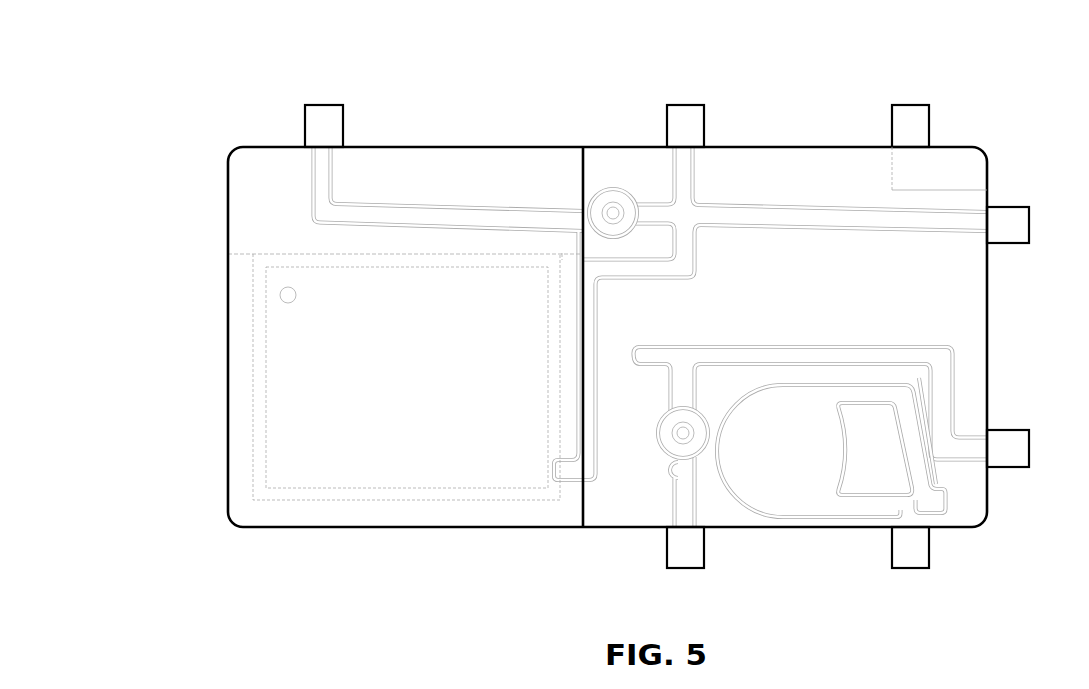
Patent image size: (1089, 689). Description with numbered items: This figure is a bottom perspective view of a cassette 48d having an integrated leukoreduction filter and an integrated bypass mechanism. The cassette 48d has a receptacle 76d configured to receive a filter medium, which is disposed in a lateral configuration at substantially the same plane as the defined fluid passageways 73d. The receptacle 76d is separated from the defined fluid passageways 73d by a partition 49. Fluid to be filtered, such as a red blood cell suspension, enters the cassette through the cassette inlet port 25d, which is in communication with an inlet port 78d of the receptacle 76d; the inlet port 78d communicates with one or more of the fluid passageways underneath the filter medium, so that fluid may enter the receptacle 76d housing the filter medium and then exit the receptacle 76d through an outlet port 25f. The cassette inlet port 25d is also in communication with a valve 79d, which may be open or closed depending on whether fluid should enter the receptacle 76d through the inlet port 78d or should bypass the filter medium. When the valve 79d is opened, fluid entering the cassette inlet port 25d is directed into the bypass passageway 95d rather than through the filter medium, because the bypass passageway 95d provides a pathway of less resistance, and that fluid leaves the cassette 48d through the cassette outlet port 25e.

The cassette 48d is at (418, 551).
The partition 49 is at (583, 420).
The cassette inlet port 25d is at (684, 117).
The cassette outlet port 25e is at (322, 117).
The outlet port 25f is at (280, 290).
The defined fluid passageways 73d is at (636, 270).
The receptacle 76d is at (298, 371).
The inlet port 78d is at (572, 470).
The valve 79d is at (613, 210).
The bypass passageway 95d is at (458, 215).